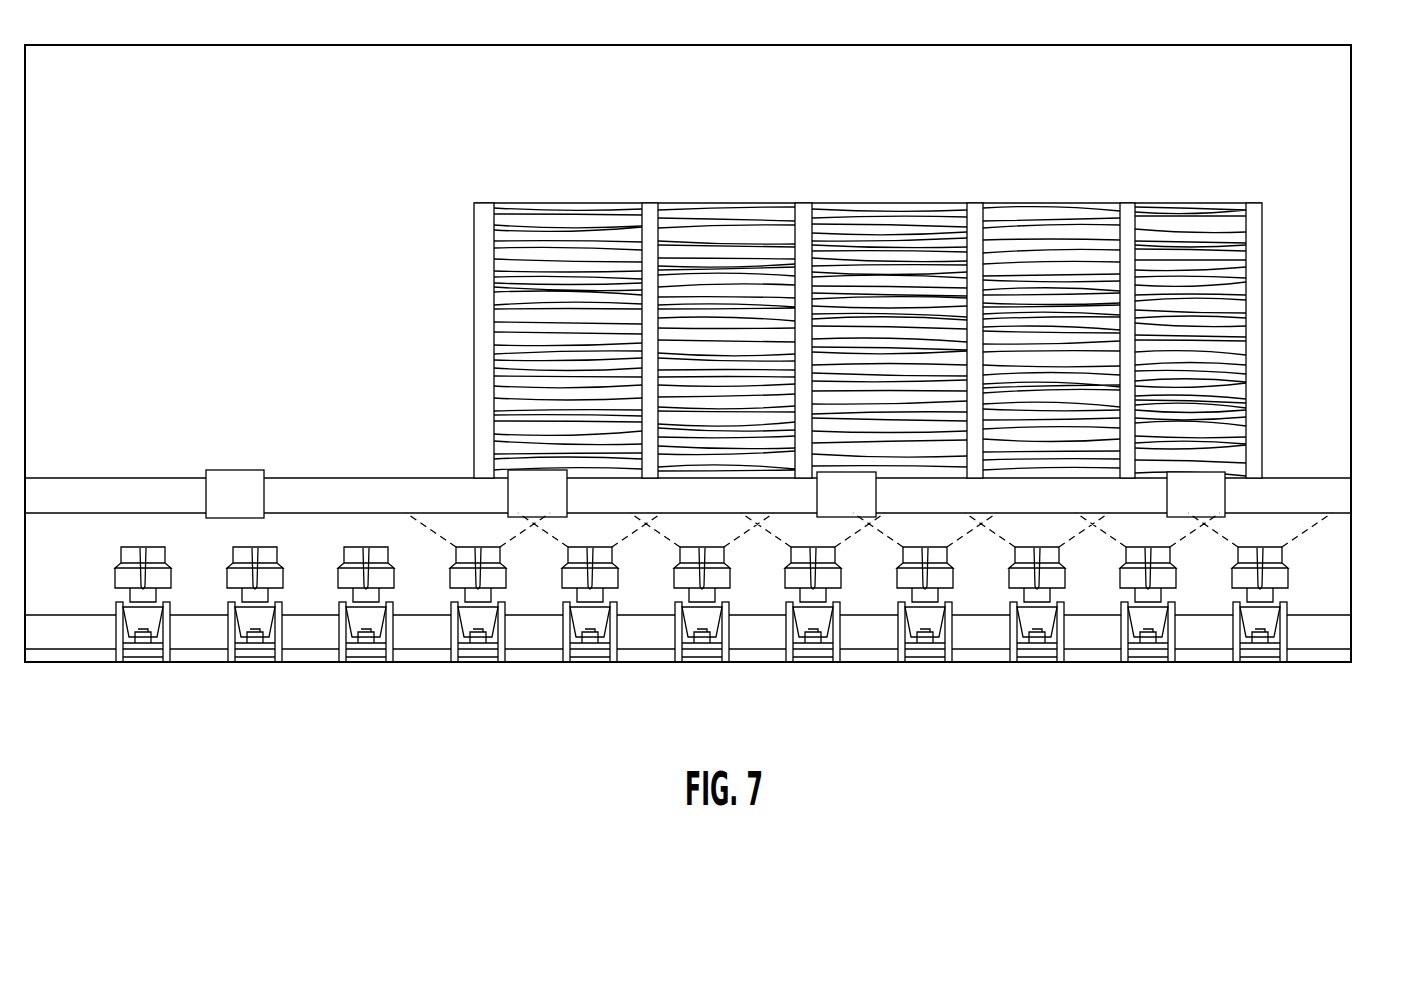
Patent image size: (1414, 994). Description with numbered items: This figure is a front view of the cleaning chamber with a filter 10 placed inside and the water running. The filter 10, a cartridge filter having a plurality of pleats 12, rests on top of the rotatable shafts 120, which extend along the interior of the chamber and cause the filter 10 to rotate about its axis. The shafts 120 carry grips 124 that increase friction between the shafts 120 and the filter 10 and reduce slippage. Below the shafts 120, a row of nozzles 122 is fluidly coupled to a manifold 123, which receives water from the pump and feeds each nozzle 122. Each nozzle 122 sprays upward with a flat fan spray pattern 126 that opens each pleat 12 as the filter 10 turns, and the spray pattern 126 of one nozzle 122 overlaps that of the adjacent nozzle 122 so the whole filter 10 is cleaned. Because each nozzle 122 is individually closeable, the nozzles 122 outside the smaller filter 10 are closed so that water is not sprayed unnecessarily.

The filter 10 is at (1199, 203).
The pleats 12 is at (1232, 327).
The shafts 120 is at (368, 478).
The nozzles 122 is at (797, 575).
The manifold 123 is at (865, 632).
The grip 124 is at (227, 488).
The spray pattern 126 is at (413, 513).